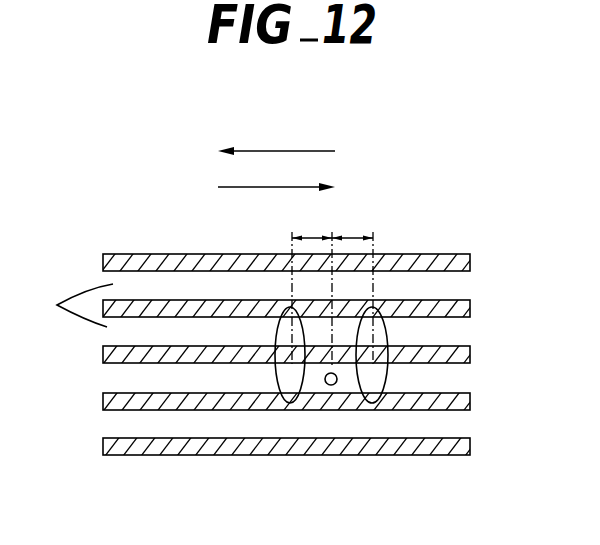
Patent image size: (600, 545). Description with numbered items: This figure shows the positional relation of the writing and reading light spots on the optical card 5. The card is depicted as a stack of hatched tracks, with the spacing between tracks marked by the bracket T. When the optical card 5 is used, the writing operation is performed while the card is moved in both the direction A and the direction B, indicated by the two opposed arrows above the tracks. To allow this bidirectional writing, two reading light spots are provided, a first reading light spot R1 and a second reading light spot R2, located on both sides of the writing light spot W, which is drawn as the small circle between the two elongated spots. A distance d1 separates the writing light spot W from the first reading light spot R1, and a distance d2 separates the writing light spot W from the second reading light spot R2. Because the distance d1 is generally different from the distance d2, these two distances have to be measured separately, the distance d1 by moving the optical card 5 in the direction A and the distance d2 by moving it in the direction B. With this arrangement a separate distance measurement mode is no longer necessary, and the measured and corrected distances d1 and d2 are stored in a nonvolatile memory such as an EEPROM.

The optical card 5 is at (515, 347).
The layer pitch / thickness T is at (73, 305).
The direction A is at (286, 151).
The direction B is at (263, 187).
The distance d1 is at (352, 288).
The distance d2 is at (312, 290).
The first reading light spot R1 is at (388, 373).
The second reading light spot R2 is at (262, 376).
The writing light spot W is at (331, 385).